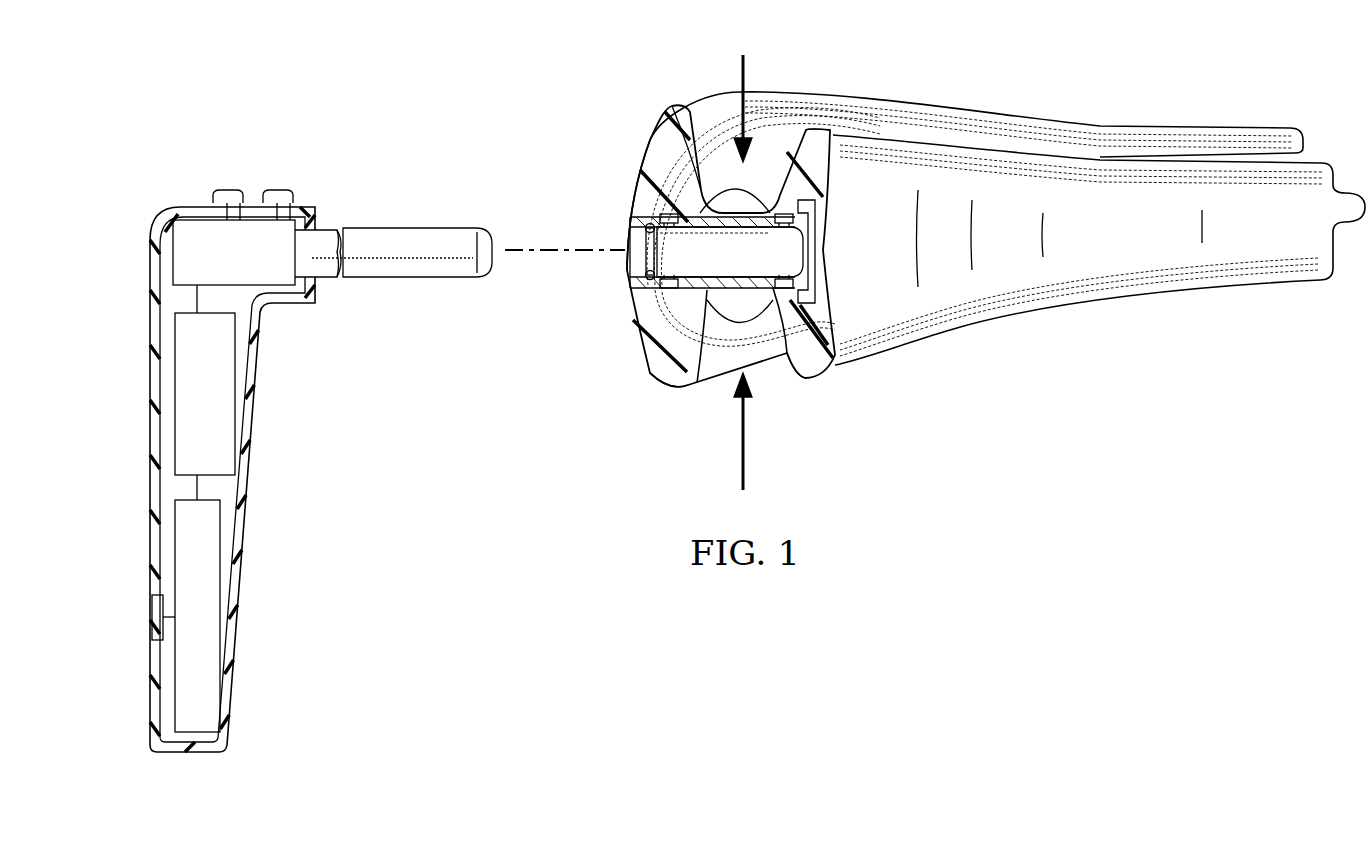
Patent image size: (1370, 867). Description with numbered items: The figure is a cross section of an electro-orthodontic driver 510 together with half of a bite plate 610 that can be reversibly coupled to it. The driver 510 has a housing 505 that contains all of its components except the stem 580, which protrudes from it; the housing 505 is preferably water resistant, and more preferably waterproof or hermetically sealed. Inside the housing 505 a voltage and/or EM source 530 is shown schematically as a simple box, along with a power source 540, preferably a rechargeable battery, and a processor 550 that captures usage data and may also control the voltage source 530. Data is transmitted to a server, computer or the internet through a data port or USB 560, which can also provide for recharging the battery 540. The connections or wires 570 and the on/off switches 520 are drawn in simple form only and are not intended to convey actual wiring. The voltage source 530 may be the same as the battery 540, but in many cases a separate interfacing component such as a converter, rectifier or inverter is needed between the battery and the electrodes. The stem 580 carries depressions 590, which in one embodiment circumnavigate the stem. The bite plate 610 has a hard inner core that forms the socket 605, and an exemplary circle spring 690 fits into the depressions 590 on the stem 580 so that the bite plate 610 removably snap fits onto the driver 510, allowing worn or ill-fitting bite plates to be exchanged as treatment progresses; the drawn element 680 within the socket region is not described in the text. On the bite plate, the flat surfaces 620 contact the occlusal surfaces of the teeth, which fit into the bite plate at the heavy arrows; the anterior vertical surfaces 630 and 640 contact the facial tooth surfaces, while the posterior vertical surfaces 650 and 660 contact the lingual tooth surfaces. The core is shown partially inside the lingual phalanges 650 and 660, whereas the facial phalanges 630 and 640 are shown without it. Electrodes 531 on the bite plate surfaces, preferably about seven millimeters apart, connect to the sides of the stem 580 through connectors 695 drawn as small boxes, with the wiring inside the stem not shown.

The housing 505 is at (248, 539).
The electro-orthodontic driver 510 is at (292, 409).
The on/off switches 520 is at (225, 192).
The voltage and/or EM source 530 is at (193, 230).
The electrodes 531 is at (665, 300).
The power source 540 is at (192, 360).
The processor 550 is at (205, 690).
The USB port 560 is at (157, 627).
The connections or wires 570 is at (195, 487).
The stem 580 is at (428, 228).
The depressions 590 is at (338, 228).
The socket 605 is at (622, 260).
The bite plate 610 is at (924, 86).
The flat surfaces 620 is at (690, 188).
The anterior vertical surface 630 is at (700, 125).
The anterior vertical surface 640 is at (713, 350).
The posterior vertical surface 650 is at (796, 160).
The posterior vertical surface 660 is at (803, 370).
The sensor housing 680 is at (785, 248).
The circle spring 690 is at (645, 242).
The connectors 695 is at (800, 222).